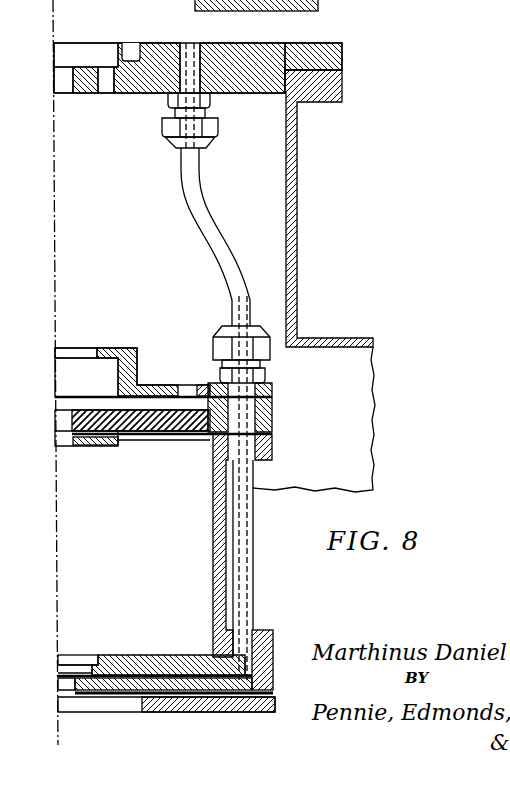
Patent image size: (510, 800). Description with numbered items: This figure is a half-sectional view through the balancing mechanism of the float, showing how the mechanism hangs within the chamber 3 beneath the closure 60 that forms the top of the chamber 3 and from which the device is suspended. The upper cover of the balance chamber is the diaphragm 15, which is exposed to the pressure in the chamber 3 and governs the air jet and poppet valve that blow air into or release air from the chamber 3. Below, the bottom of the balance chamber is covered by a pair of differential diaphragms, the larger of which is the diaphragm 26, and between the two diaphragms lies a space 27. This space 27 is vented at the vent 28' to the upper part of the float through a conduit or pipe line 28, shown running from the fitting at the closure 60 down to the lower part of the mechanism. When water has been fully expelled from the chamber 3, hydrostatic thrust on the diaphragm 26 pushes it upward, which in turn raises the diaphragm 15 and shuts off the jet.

The closure 60 is at (306, 44).
The chamber 3 is at (334, 464).
The vent 28' is at (173, 81).
The conduit or pipe line 28 is at (236, 414).
The diaphragm 15 is at (180, 439).
The space 27 is at (122, 677).
The diaphragm 26 is at (82, 694).